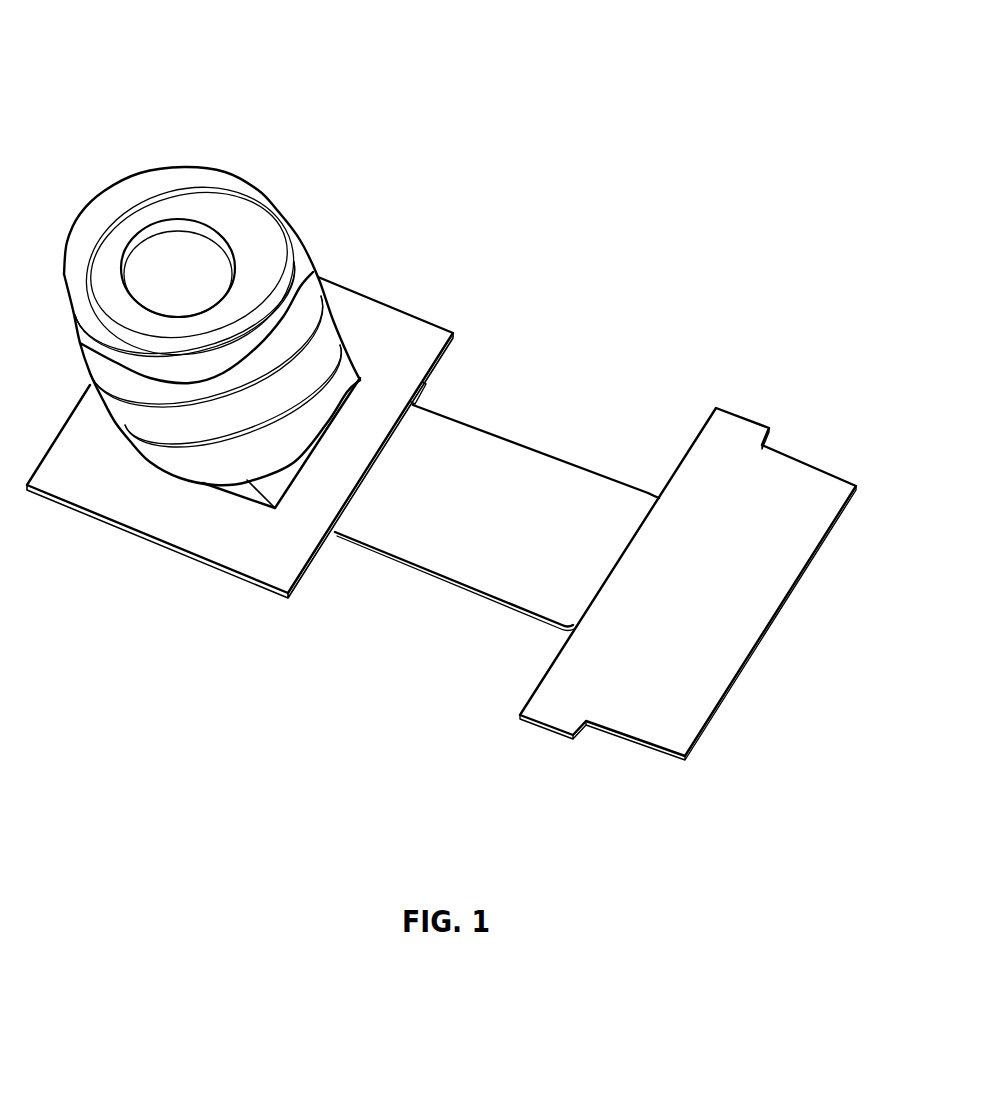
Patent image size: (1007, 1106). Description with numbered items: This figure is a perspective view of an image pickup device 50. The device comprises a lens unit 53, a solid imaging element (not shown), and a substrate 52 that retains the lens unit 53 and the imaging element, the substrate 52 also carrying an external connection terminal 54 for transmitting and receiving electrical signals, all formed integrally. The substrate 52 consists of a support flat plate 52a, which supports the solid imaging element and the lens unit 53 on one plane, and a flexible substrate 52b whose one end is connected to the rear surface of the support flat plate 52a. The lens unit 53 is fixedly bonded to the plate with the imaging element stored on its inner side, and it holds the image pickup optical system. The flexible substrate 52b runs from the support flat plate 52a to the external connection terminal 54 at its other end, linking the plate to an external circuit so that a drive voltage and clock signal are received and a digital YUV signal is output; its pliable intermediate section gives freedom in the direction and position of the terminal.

The image pickup device 50 is at (580, 92).
The substrate 52 is at (433, 661).
The support flat plate 52a is at (307, 567).
The flexible substrate 52b is at (409, 566).
The lens unit 53 is at (318, 277).
The external connection terminal 54 is at (643, 718).